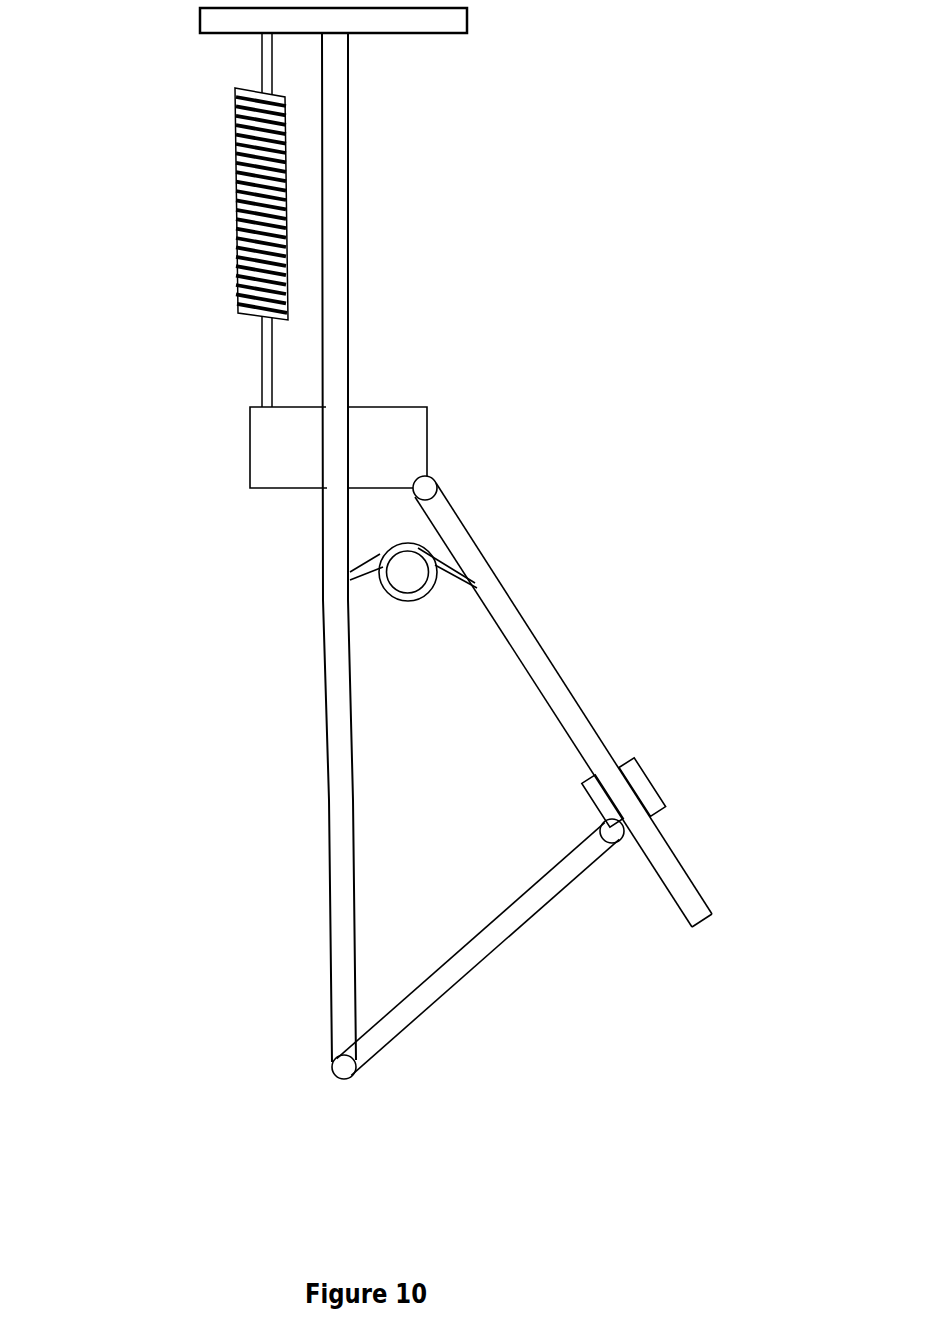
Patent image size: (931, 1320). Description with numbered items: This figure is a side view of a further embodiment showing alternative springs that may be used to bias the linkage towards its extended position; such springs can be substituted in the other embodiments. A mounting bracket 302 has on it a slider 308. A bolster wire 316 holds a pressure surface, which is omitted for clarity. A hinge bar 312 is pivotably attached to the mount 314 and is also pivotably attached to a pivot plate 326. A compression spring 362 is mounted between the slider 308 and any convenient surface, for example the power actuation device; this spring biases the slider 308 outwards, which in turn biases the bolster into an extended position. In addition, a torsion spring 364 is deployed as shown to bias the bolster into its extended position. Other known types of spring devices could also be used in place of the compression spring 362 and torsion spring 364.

The mounting bracket 302 is at (340, 840).
The slider 308 is at (384, 428).
The hinge bar 312 is at (530, 908).
The mount 314 is at (343, 1068).
The bolster wire 316 is at (668, 855).
The pivot plate 326 is at (641, 773).
The compression spring 362 is at (250, 217).
The torsion spring 364 is at (407, 597).